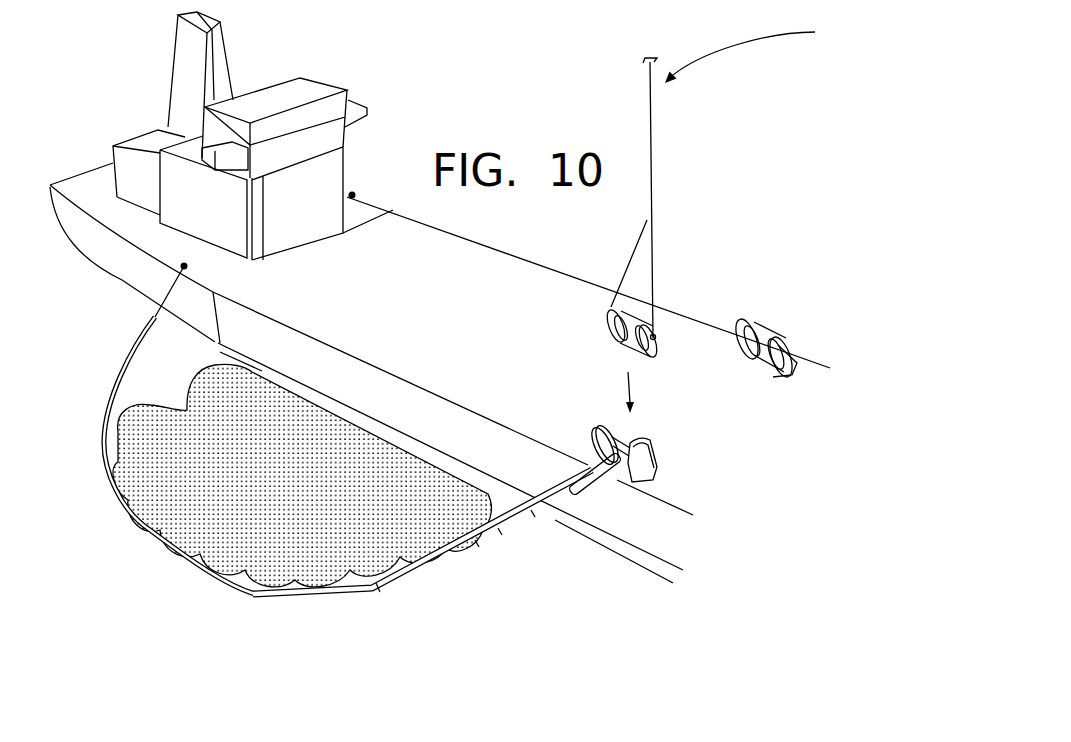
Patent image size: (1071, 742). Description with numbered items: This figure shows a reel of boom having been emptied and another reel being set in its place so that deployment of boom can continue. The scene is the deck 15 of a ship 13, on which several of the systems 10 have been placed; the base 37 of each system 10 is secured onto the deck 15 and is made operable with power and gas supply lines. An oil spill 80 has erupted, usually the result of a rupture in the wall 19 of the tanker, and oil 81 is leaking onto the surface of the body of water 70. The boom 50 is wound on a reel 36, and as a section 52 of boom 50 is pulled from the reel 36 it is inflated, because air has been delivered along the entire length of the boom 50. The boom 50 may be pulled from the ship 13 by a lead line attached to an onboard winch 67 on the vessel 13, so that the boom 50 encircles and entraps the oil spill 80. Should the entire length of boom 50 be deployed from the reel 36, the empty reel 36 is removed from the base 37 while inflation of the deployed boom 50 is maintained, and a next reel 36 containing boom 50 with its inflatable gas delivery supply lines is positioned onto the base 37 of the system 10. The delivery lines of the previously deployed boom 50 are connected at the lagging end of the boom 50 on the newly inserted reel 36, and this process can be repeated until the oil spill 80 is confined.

The system 10 is at (776, 316).
The ship 13 is at (97, 312).
The deck 15 is at (455, 330).
The wall 19 is at (655, 518).
The reel 36 is at (607, 318).
The base 37 is at (656, 468).
The boom 50 is at (588, 462).
The section of boom 52 is at (107, 457).
The onboard winch 67 is at (178, 262).
The body of water 70 is at (551, 598).
The oil spill 80 is at (319, 479).
The oil 81 is at (280, 545).